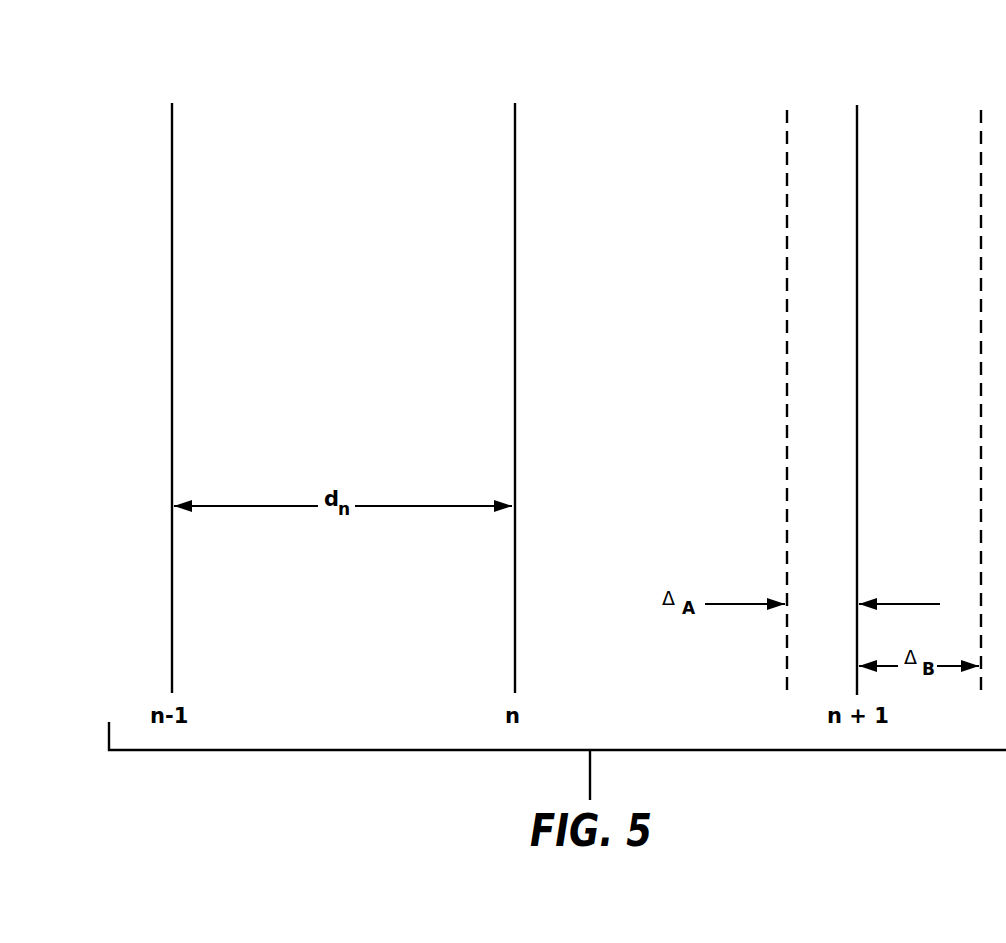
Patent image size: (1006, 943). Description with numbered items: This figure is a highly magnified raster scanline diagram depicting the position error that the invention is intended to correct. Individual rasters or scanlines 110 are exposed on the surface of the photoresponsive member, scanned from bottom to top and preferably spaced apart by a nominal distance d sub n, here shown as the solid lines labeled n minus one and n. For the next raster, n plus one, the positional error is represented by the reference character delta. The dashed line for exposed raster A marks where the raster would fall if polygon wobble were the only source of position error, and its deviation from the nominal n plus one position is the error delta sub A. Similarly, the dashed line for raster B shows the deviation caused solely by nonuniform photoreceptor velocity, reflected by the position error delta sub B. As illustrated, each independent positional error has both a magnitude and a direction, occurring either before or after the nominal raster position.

The rasters or scanlines 110 is at (172, 130).
The exposed raster A is at (786, 140).
The raster B is at (980, 140).